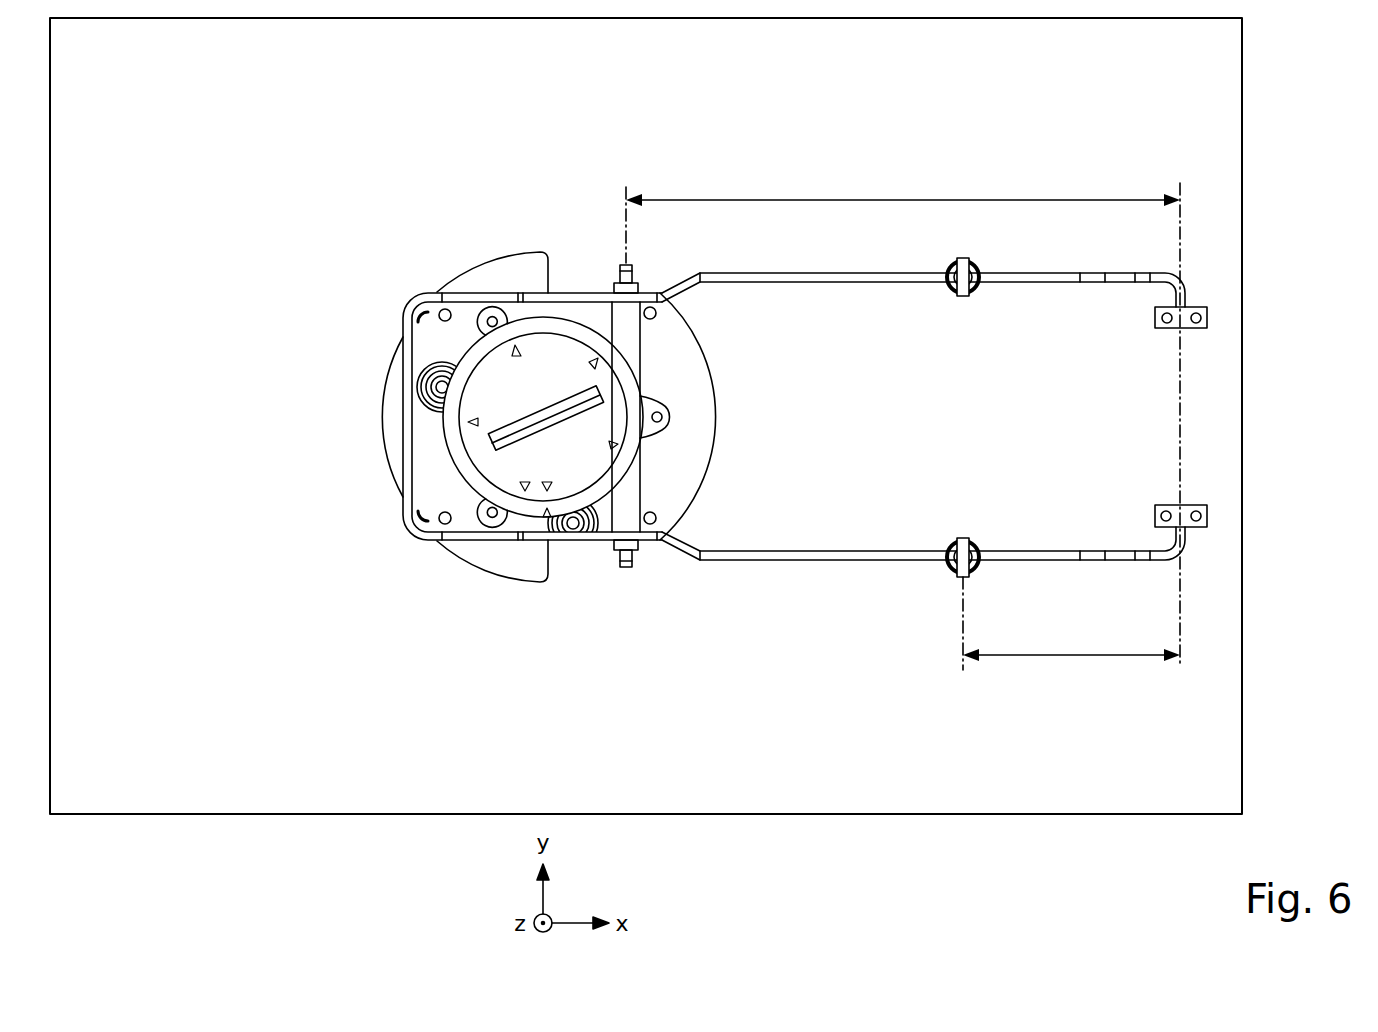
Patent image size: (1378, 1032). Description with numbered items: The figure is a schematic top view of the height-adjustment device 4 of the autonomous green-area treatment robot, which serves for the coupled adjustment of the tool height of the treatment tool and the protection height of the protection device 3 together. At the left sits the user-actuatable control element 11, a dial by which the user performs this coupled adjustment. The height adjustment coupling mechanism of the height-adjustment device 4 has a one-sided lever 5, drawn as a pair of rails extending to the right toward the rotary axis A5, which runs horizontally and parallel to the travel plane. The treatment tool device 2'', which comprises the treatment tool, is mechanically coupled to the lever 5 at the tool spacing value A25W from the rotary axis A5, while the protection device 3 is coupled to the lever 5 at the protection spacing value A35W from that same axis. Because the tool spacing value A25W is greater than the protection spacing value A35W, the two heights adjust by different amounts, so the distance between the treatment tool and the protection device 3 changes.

The height-adjustment device 4 is at (360, 238).
The treatment tool device 2'' is at (599, 413).
The user-actuatable control element 11 is at (543, 417).
The lever 5 is at (1003, 278).
The protection device 3 is at (950, 262).
The tool spacing value A25W is at (903, 185).
The protection spacing value A35W is at (1071, 623).
The rotary axis A5 is at (1181, 428).